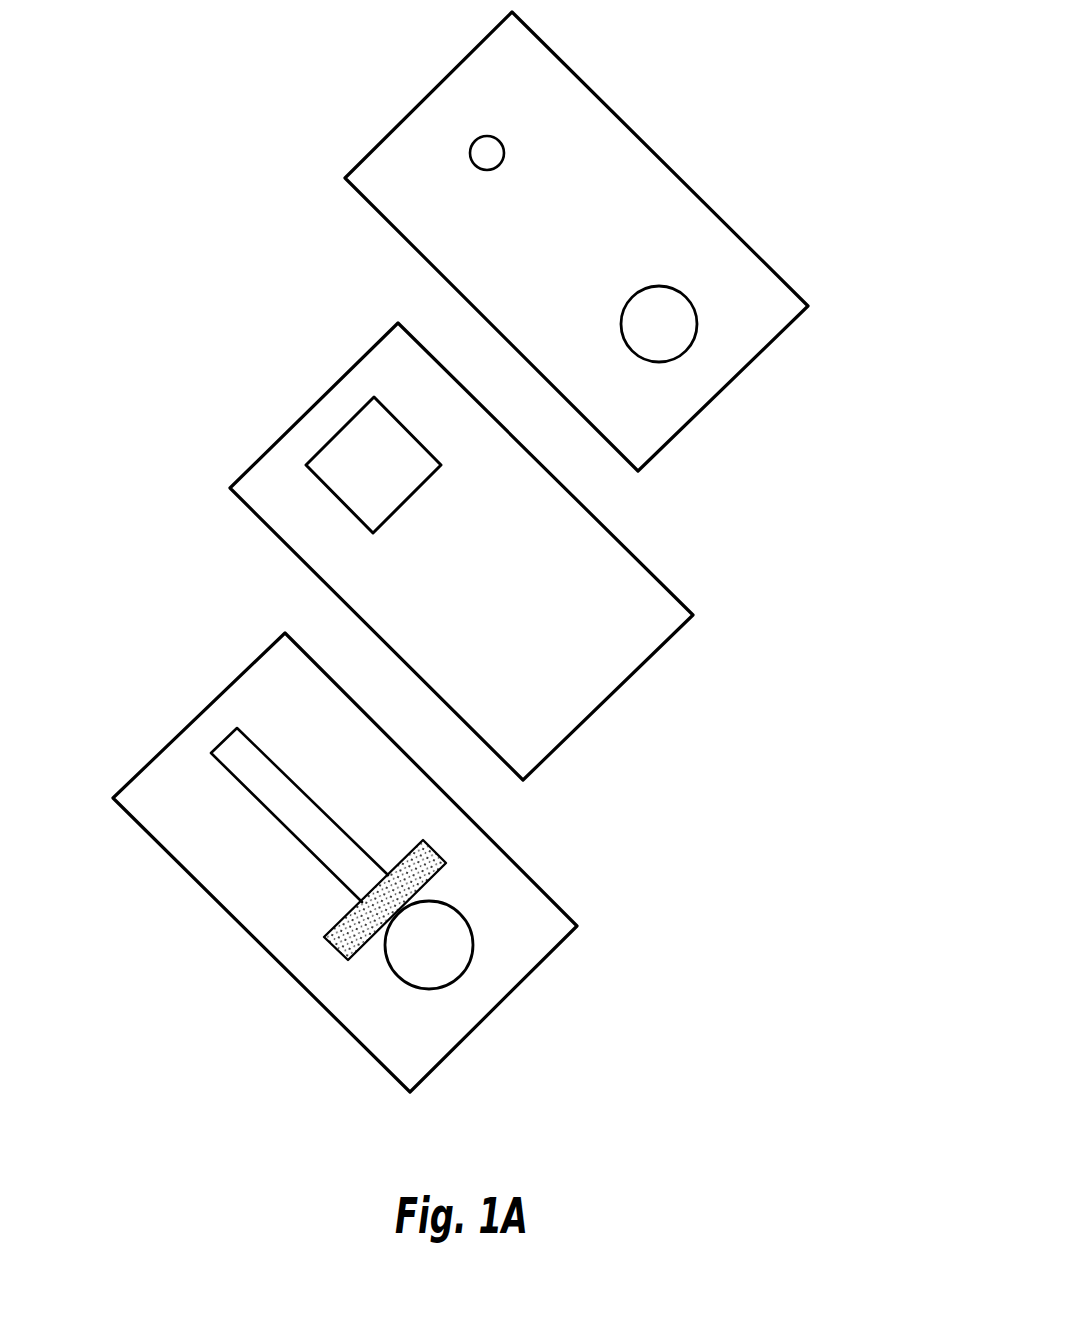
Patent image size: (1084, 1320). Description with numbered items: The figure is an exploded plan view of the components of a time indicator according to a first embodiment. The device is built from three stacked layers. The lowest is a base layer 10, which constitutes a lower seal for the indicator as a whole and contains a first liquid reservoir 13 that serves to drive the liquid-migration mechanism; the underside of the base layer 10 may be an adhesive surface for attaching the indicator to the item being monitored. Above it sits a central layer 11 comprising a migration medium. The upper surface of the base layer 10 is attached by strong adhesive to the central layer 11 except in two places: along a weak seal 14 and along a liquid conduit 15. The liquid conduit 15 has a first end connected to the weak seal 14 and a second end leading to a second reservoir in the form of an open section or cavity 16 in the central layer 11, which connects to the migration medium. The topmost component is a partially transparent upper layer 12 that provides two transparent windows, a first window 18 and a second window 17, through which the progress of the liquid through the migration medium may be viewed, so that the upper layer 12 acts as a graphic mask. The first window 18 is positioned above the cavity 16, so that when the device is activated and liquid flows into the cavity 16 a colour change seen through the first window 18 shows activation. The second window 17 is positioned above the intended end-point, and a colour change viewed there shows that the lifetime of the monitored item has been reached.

The base layer 10 is at (240, 872).
The central layer 11 is at (601, 668).
The upper layer 12 is at (645, 190).
The first liquid reservoir 13 is at (445, 957).
The weak seal 14 is at (345, 938).
The liquid conduit 15 is at (232, 749).
The cavity 16 is at (355, 452).
The second window 17 is at (672, 333).
The first window 18 is at (480, 148).